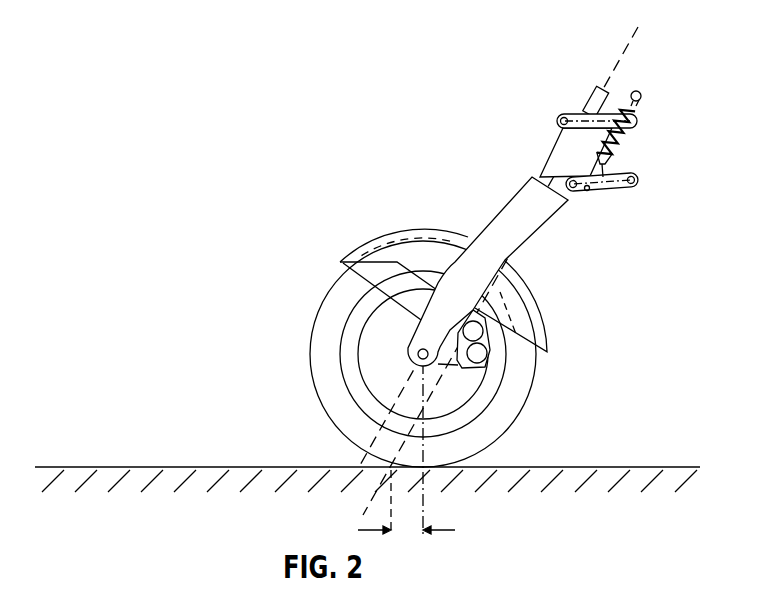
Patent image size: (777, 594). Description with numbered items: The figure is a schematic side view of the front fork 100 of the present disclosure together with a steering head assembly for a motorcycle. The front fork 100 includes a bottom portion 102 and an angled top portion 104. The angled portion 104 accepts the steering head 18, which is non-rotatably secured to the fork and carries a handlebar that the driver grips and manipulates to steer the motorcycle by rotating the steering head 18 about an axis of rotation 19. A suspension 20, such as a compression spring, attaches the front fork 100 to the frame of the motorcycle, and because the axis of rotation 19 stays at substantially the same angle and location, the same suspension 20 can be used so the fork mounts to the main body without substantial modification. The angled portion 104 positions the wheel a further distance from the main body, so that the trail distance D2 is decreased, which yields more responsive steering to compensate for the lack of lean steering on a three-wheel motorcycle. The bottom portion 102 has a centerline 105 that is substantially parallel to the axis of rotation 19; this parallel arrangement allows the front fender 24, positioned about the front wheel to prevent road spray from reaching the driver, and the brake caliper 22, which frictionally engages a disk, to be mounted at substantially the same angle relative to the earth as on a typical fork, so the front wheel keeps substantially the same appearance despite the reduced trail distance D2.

The front fork 100 is at (372, 84).
The axis of rotation 19 is at (626, 50).
The steering head 18 is at (557, 150).
The suspension 20 is at (636, 132).
The angled top portion 104 is at (500, 210).
The bottom portion 102 is at (343, 266).
The front fender 24 is at (537, 303).
The caliper 22 is at (490, 360).
The centerline 105 is at (410, 386).
The trail distance D2 is at (406, 550).